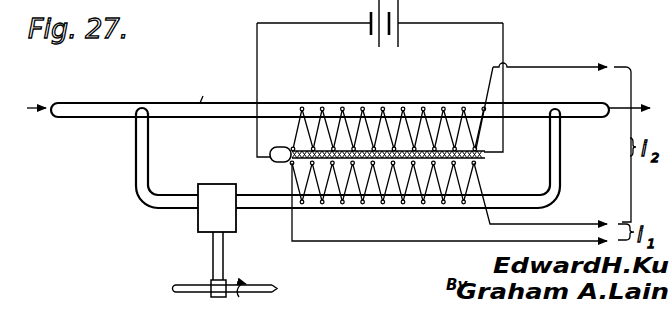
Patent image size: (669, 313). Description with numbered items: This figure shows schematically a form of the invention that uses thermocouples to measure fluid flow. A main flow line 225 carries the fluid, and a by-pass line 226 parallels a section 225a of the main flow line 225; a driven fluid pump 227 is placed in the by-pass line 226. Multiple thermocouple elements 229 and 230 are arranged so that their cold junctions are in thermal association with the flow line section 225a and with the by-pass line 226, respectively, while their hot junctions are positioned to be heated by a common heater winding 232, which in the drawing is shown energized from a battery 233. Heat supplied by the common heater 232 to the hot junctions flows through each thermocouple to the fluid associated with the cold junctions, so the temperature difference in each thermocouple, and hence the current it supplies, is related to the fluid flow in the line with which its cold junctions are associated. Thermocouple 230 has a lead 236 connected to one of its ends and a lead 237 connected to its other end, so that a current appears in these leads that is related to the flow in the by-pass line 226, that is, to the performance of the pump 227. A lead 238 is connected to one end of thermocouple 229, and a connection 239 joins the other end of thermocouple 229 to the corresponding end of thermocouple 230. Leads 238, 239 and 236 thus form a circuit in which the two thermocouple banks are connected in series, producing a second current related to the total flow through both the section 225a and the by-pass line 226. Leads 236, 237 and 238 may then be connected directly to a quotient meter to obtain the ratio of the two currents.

The main flow line 225 is at (96, 106).
The section of main flow line 225a is at (214, 88).
The by-pass line 226 is at (272, 206).
The driven fluid pump 227 is at (225, 240).
The thermocouple elements 229 is at (412, 110).
The thermocouple elements 230 is at (372, 196).
The common heater winding 232 is at (484, 156).
The battery 233 is at (402, 17).
The lead 236 is at (546, 224).
The lead 237 is at (408, 241).
The lead 238 is at (540, 67).
The connection 239 is at (270, 165).